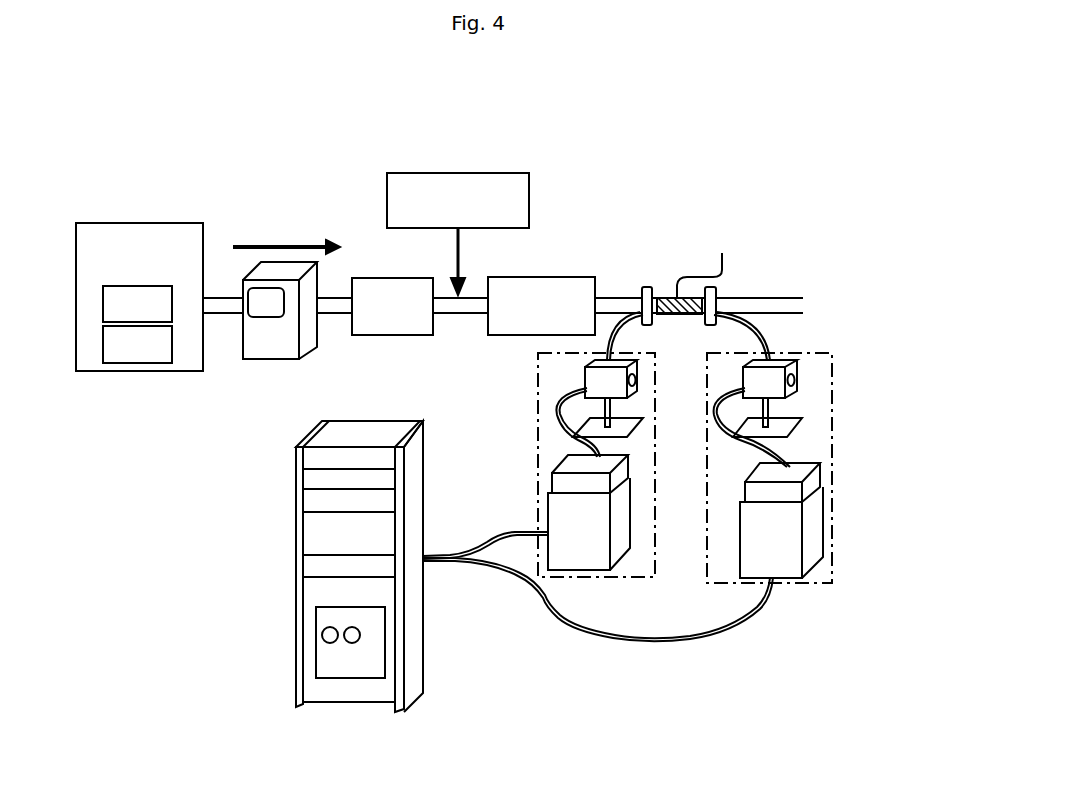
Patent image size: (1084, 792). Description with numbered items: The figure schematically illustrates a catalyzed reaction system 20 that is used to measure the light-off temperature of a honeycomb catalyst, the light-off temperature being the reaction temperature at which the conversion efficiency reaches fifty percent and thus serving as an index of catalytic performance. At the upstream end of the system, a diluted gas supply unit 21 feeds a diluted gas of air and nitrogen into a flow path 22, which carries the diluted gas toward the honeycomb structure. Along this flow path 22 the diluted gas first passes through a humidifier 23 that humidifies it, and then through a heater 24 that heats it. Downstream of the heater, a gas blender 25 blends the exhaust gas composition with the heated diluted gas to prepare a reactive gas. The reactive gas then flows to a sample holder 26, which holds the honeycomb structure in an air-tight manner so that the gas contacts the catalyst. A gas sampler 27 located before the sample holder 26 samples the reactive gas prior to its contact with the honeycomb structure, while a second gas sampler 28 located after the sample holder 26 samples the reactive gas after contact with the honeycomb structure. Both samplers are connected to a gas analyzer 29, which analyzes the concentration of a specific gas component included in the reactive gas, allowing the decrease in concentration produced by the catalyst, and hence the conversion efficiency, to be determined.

The catalyzed reaction system 20 is at (451, 140).
The diluted gas supply unit 21 is at (148, 371).
The flow path 22 is at (223, 313).
The humidifier 23 is at (270, 359).
The heater 24 is at (380, 335).
The gas blender 25 is at (495, 335).
The sample holder 26 is at (647, 287).
The gas sampler 27 is at (522, 478).
The gas sampler 28 is at (790, 585).
The gas analyzer 29 is at (423, 630).